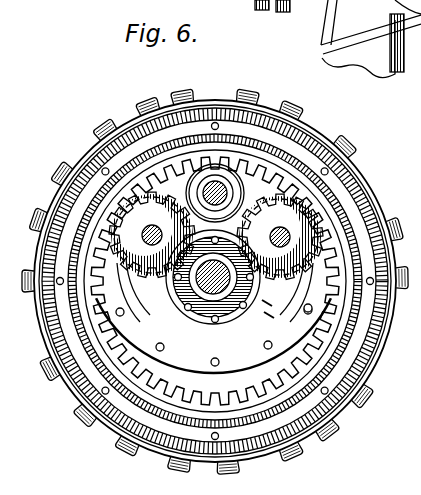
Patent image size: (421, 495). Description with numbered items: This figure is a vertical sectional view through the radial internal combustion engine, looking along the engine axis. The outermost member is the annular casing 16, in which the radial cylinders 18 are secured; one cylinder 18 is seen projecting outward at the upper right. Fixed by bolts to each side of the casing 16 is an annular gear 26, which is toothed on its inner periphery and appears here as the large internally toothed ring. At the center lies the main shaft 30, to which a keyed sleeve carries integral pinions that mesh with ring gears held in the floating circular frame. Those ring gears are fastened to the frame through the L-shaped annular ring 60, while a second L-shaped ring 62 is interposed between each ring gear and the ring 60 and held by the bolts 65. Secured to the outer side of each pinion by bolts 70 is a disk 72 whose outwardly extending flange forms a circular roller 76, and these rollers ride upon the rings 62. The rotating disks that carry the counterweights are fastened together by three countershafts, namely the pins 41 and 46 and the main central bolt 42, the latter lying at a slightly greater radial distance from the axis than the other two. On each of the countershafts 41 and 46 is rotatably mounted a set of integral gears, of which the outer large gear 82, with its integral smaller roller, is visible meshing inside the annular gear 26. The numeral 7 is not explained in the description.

The casing 16 is at (167, 110).
The radial cylinder 18 is at (368, 422).
The annular gear 26 is at (278, 392).
The main shaft 30 is at (214, 321).
The countershaft 41 is at (152, 235).
The main central bolt 42 is at (224, 182).
The countershaft 46 is at (280, 237).
The annular ring 60 is at (214, 336).
The ring 62 is at (268, 309).
The bolt 65 is at (308, 304).
The bolt 70 is at (212, 292).
The disk 72 is at (162, 303).
The circular roller 76 is at (225, 335).
The outer large gear 82 is at (216, 235).
The housing part 7 is at (402, 244).